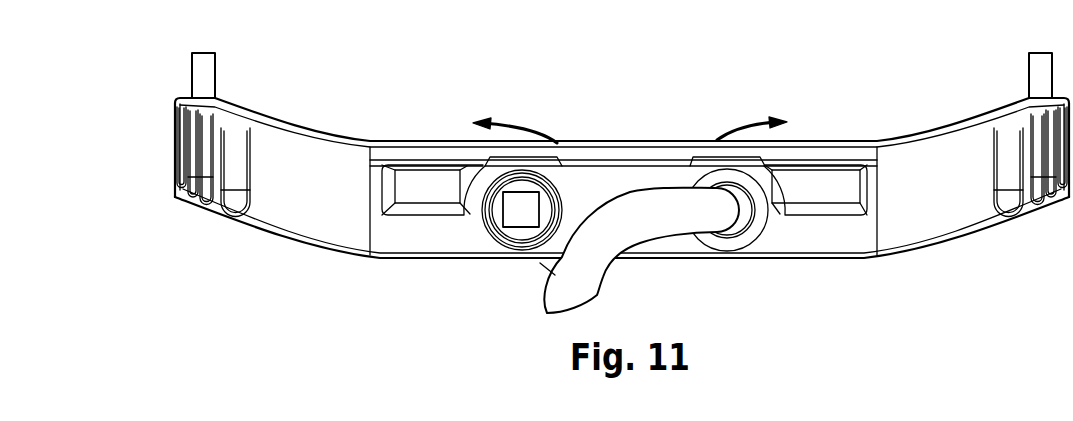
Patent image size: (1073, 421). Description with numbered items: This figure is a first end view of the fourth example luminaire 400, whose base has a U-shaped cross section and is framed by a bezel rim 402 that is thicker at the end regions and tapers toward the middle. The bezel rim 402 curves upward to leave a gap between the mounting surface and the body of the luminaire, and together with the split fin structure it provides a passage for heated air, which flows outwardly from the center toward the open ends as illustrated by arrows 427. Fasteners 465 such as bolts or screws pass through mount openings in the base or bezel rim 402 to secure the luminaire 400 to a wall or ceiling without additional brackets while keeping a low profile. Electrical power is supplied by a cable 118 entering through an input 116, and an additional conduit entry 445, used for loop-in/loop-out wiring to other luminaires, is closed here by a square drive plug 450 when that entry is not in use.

The fourth example luminaire 400 is at (622, 186).
The bezel rim 402 is at (940, 203).
The fasteners 465 is at (203, 77).
The arrows 427 is at (518, 123).
The additional conduit entry 445 is at (486, 229).
The square drive plug 450 is at (529, 212).
The input 116 is at (750, 227).
The cable 118 is at (580, 260).